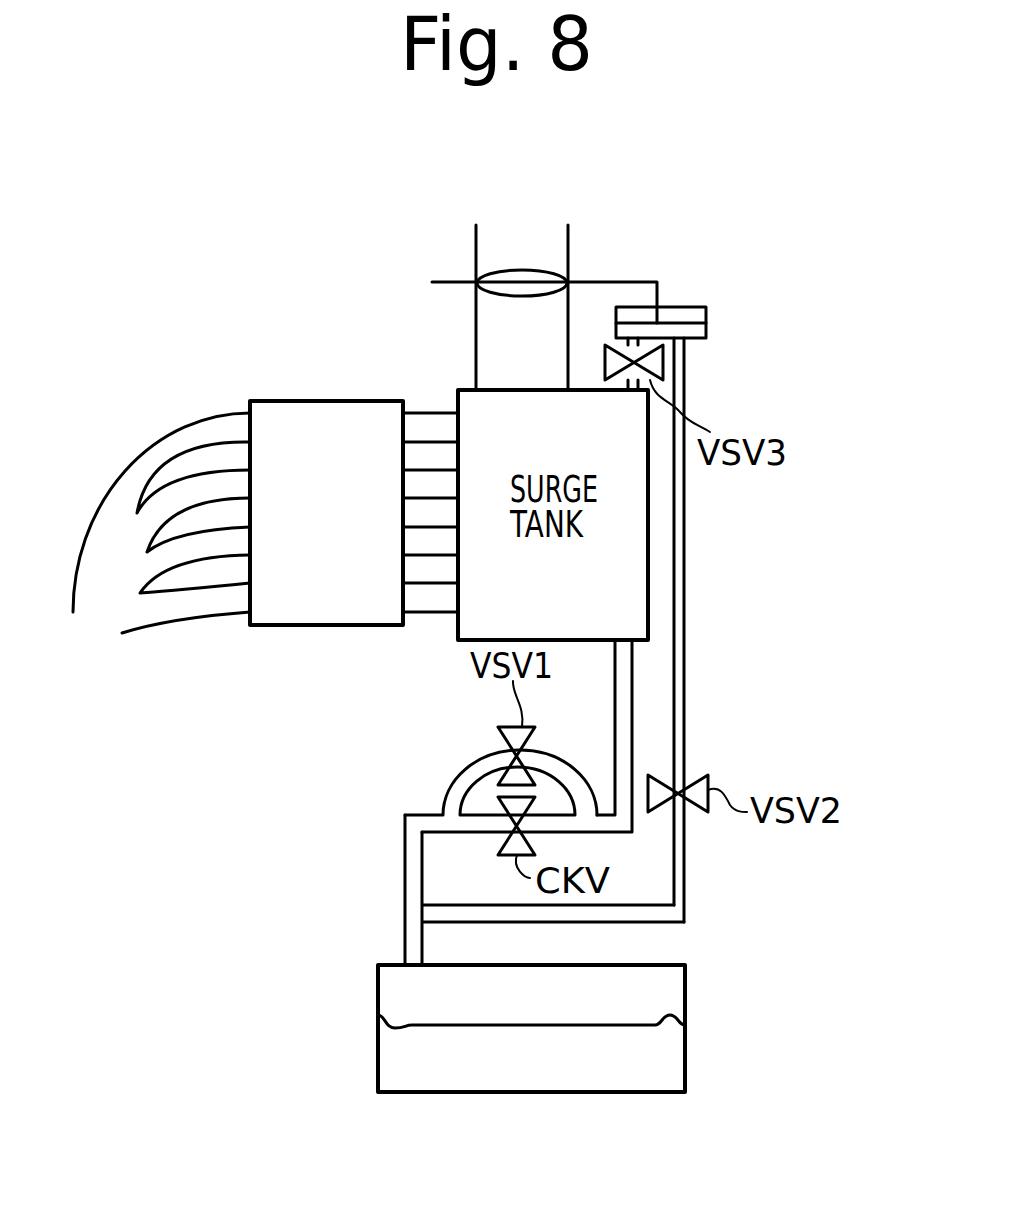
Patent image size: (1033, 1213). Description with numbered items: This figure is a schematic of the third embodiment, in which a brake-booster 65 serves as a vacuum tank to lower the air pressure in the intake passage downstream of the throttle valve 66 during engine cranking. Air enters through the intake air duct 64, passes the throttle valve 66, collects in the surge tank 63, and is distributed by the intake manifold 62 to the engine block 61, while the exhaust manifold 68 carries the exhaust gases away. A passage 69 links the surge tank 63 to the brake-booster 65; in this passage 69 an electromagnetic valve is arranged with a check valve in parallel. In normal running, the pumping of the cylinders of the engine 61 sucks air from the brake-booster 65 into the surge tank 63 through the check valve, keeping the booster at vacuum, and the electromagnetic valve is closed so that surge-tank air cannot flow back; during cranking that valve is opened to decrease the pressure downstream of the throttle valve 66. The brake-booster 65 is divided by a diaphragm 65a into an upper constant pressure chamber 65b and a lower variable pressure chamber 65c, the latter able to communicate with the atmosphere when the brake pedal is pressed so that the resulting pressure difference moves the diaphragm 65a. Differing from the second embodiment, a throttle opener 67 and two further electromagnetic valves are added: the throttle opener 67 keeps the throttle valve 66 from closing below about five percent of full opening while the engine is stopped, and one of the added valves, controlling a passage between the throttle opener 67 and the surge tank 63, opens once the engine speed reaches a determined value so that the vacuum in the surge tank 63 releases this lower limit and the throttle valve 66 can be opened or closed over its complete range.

The engine block 61 is at (270, 401).
The intake manifold 62 is at (428, 412).
The surge tank 63 is at (600, 641).
The intake air duct 64 is at (570, 250).
The brake-booster 65 is at (523, 1011).
The diaphragm 65a is at (378, 1015).
The constant pressure chamber 65b is at (673, 985).
The variable pressure chamber 65c is at (668, 1055).
The throttle valve 66 is at (488, 272).
The throttle opener 67 is at (693, 307).
The exhaust manifold 68 is at (117, 485).
The passage 69 is at (405, 860).